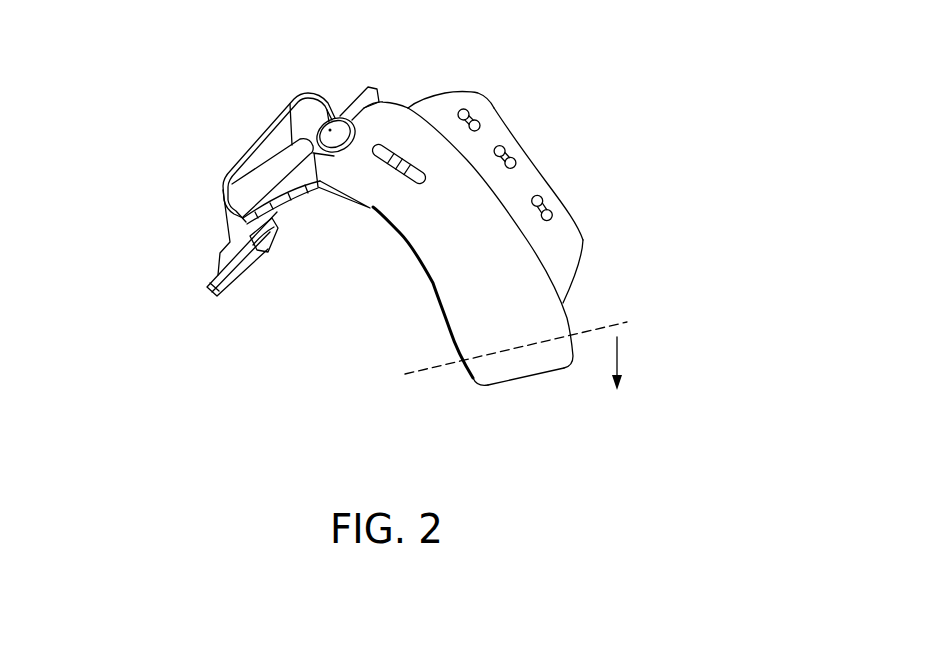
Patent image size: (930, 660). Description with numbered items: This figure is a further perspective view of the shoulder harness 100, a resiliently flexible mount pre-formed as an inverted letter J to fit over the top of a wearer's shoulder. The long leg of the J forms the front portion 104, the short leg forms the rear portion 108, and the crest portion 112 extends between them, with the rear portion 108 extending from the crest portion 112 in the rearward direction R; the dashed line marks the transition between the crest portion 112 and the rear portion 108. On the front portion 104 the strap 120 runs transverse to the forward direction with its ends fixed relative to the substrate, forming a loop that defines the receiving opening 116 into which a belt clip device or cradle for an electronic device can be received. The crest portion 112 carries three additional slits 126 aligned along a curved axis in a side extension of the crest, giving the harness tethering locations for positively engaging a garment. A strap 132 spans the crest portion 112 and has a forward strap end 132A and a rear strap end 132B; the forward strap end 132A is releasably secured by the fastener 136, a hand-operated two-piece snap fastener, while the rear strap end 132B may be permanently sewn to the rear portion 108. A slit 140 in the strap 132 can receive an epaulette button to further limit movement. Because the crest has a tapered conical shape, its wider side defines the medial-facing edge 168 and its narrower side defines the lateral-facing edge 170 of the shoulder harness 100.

The shoulder harness 100 is at (660, 92).
The front portion 104 is at (247, 320).
The rear portion 108 is at (440, 396).
The crest portion 112 is at (378, 286).
The receiving opening 116 is at (279, 130).
The strap 120 is at (245, 152).
The additional slits 126 is at (470, 120).
The strap 132 is at (450, 270).
The forward strap end 132A is at (397, 125).
The rear strap end 132B is at (533, 370).
The fastener 136 is at (337, 113).
The slit 140 is at (417, 177).
The medial-facing edge 168 is at (582, 243).
The lateral-facing edge 170 is at (450, 327).